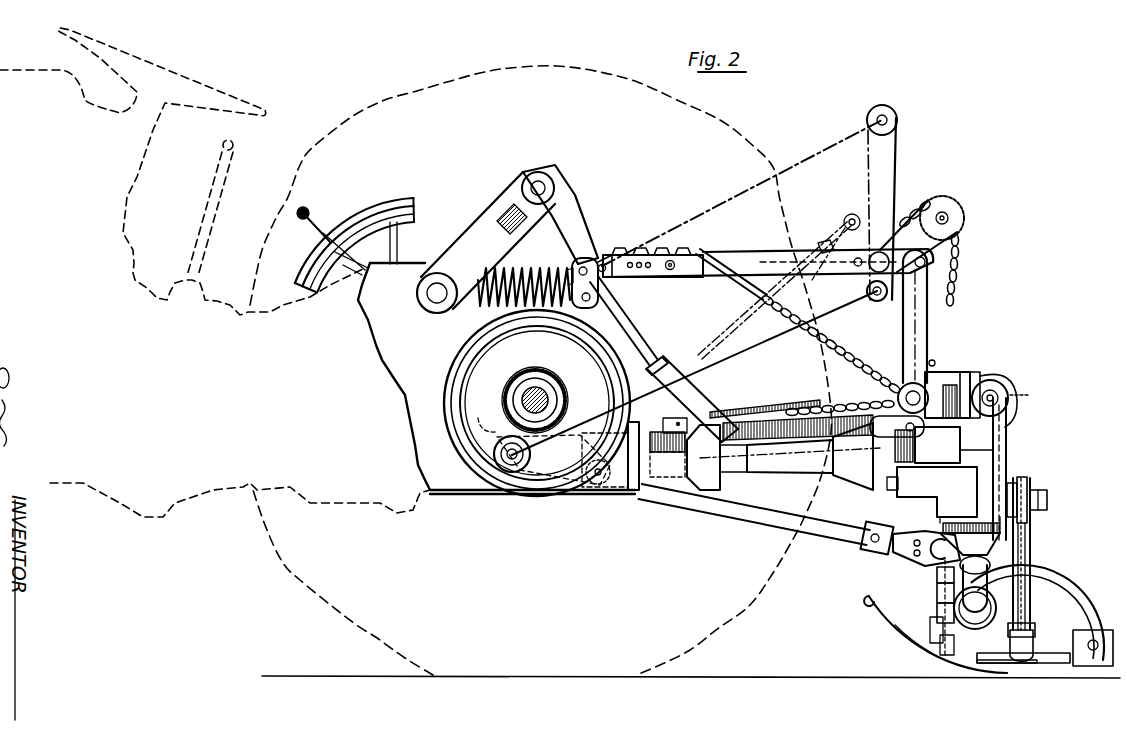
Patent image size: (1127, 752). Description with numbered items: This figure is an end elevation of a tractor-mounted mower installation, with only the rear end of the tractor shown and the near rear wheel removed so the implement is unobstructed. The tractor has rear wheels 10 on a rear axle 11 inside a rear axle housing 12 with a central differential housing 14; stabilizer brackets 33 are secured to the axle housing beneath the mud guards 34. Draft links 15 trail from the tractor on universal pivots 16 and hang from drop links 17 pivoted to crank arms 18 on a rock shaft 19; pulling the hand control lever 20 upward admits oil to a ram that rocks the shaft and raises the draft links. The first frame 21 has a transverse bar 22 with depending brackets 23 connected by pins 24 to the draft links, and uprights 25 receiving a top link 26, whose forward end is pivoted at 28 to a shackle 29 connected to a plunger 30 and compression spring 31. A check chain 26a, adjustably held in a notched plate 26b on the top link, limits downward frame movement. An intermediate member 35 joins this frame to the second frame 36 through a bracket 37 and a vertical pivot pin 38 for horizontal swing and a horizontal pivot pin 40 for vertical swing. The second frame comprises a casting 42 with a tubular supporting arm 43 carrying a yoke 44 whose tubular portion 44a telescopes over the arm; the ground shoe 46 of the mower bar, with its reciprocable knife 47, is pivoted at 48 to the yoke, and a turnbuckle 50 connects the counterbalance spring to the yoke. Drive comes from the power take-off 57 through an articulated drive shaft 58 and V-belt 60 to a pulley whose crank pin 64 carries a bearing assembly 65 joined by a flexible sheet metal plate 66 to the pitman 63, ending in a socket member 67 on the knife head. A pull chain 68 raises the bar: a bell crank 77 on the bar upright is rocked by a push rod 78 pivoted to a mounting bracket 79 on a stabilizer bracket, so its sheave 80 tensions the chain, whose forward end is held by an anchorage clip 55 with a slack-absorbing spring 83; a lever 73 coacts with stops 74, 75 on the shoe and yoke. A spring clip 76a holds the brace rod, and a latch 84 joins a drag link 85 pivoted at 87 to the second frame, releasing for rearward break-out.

The rear wheels 10 is at (280, 567).
The rear axle 11 is at (524, 396).
The rear axle housing 12 is at (525, 369).
The differential housing 14 is at (457, 364).
The draft links 15 is at (540, 462).
The universal pivots 16 is at (506, 468).
The drop links 17 is at (643, 342).
The crank arms 18 is at (492, 229).
The rock shaft 19 is at (432, 300).
The hand control lever 20 is at (318, 222).
The first frame 21 is at (1040, 382).
The transverse bar 22 is at (898, 396).
The depending brackets 23 is at (927, 445).
The pins 24 is at (897, 427).
The uprights 25 is at (900, 186).
The top link 26 is at (733, 252).
The check chain 26a is at (806, 340).
The notched plate 26b is at (663, 279).
The pivot 28 is at (610, 258).
The shackle 29 is at (601, 263).
The plunger 30 is at (541, 272).
The compression spring 31 is at (517, 276).
The stabilizer brackets 33 is at (492, 422).
The mud guards 34 is at (402, 92).
The intermediate member 35 is at (1008, 382).
The second frame 36 is at (1069, 494).
The bracket 37 is at (972, 372).
The vertical pivot pin 38 is at (950, 372).
The horizontal pivot pin 40 is at (977, 451).
The casting 42 is at (897, 498).
The tubular supporting arm 43 is at (968, 612).
The yoke 44 is at (1070, 586).
The tubular portion 44a is at (998, 608).
The ground shoe 46 is at (968, 663).
The knife 47 is at (1014, 663).
The pivot 48 is at (1098, 630).
The turnbuckle 50 is at (937, 592).
The anchorage clip 55 is at (630, 492).
The power take-off 57 is at (700, 488).
The drive shaft 58 is at (795, 470).
The V-belt 60 is at (1008, 436).
The pitman 63 is at (1032, 553).
The crank pin 64 is at (1048, 502).
The bearing assembly 65 is at (1031, 487).
The sheet metal plate 66 is at (1032, 535).
The socket member 67 is at (1035, 645).
The pull chain 68 is at (962, 265).
The lever 73 is at (937, 576).
The stop 74 is at (930, 625).
The stop 75 is at (930, 615).
The spring clip 76a is at (938, 366).
The bell crank 77 is at (848, 214).
The push rod 78 is at (748, 313).
The mounting bracket 79 is at (592, 487).
The sheave 80 is at (958, 205).
The spring 83 is at (743, 414).
The latch 84 is at (858, 548).
The drag link 85 is at (748, 505).
The pivot 87 is at (930, 536).